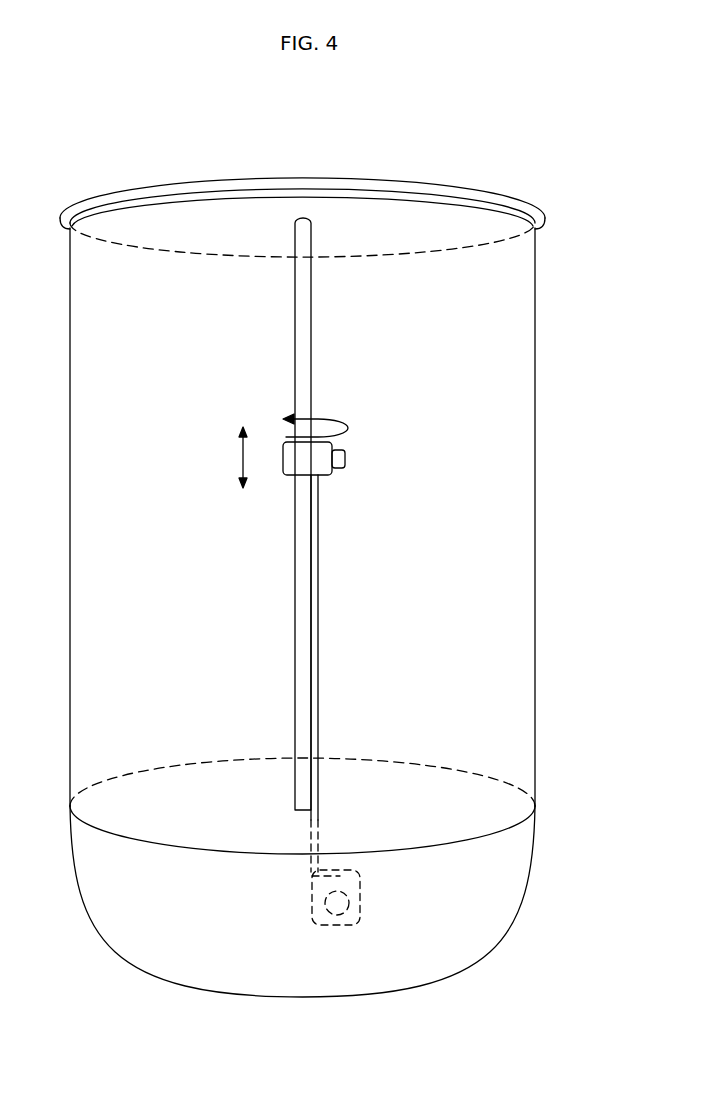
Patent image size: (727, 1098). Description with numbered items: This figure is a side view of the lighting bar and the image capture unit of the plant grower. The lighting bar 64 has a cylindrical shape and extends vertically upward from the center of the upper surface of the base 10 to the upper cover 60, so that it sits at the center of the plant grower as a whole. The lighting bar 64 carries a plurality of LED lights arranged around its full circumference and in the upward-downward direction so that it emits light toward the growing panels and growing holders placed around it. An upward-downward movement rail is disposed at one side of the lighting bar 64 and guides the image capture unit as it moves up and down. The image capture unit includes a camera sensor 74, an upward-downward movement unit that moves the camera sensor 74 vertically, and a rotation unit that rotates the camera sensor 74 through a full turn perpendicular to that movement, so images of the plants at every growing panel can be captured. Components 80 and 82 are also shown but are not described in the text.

The base 10 is at (510, 856).
The upper cover 60 is at (457, 195).
The lighting bar 64 is at (300, 313).
The camera sensor 74 is at (349, 453).
The drive motor 80 is at (358, 912).
The guide rod 82 is at (313, 592).